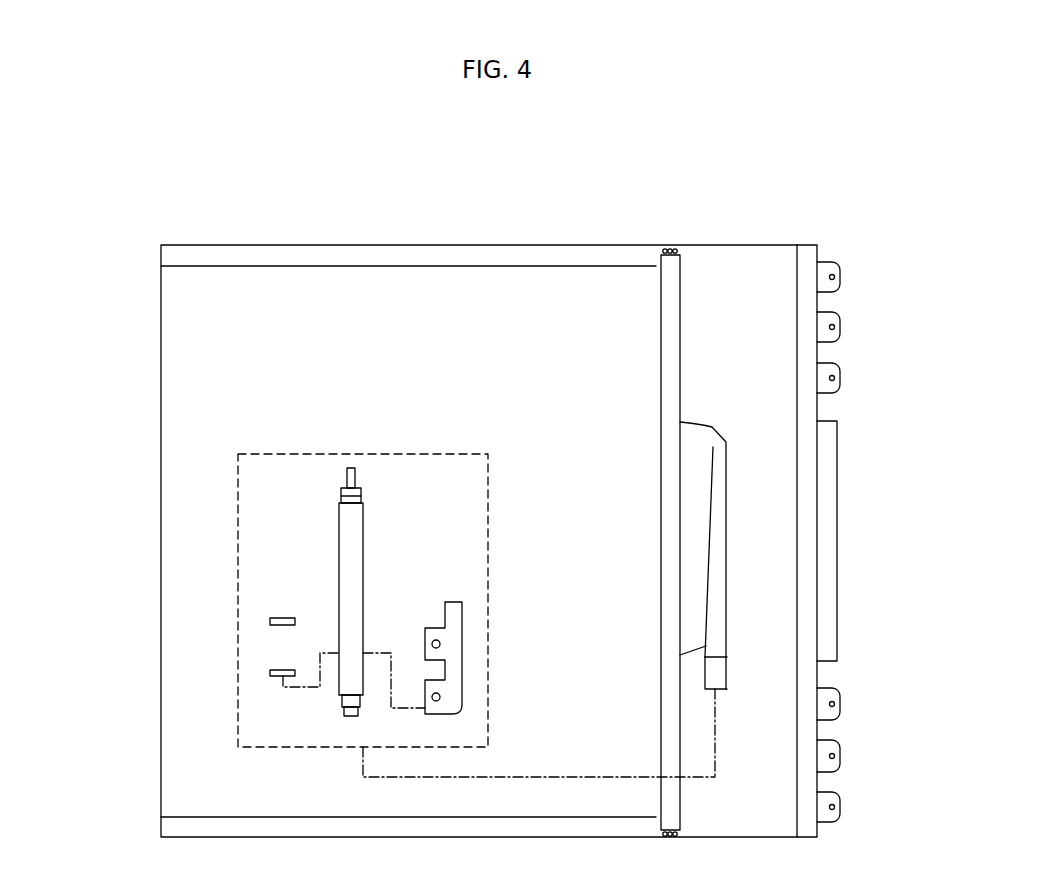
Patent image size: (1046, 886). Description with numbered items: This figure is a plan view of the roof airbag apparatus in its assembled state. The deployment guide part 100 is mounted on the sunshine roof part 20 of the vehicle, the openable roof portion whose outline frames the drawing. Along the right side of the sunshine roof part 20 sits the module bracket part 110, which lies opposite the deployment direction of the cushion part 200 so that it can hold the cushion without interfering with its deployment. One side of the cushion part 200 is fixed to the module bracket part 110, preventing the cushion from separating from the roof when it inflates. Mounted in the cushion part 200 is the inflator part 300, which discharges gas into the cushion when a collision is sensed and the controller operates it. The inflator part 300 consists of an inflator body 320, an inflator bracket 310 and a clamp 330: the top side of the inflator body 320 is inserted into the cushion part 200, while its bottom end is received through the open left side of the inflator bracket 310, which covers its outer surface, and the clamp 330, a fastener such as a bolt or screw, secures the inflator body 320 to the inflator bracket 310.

The sunshine roof part 20 is at (161, 540).
The deployment guide part 100 is at (503, 265).
The module bracket part 110 is at (819, 548).
The cushion part 200 is at (672, 305).
The inflator part 300 is at (490, 396).
The inflator bracket 310 is at (452, 618).
The inflator body 320 is at (348, 525).
The clamp 330 is at (283, 617).